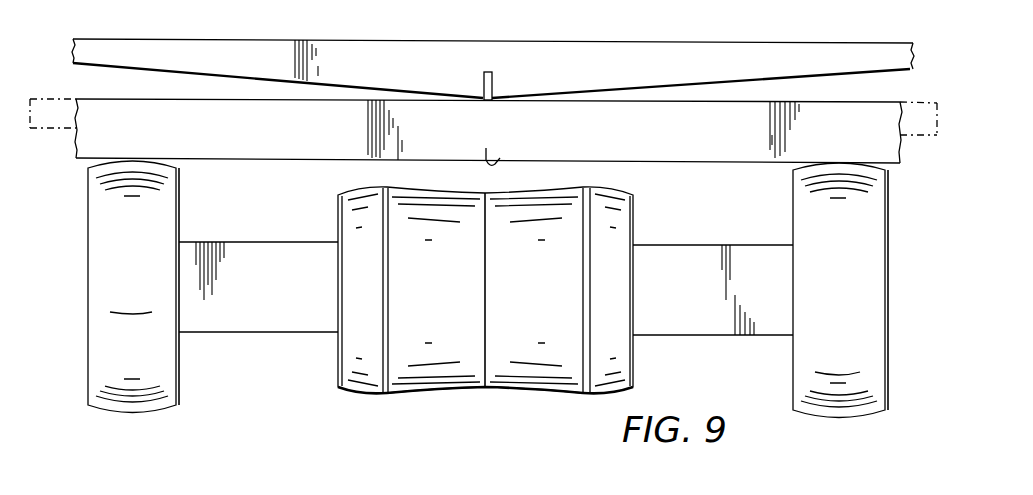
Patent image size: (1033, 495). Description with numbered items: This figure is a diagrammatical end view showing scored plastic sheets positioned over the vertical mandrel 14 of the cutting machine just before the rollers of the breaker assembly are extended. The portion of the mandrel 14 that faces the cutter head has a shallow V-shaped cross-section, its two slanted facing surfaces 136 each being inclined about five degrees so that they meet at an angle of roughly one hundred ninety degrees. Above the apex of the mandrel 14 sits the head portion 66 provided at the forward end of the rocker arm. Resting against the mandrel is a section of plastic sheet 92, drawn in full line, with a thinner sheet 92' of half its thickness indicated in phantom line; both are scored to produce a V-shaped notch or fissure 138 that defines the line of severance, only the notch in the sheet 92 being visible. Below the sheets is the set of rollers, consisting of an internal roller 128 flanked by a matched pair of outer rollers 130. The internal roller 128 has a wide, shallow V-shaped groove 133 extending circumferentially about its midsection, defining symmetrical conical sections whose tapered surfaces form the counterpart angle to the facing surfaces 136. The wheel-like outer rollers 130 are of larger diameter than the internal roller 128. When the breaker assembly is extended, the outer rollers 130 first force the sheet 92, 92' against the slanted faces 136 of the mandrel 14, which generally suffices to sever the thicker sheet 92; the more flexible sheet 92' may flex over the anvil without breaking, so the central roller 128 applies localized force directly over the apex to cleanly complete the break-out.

The vertical mandrel 14 is at (355, 50).
The facing surfaces 136 is at (134, 68).
The head portion 66 is at (493, 86).
The plastic sheet 92 is at (488, 152).
The plastic sheet 92' is at (482, 141).
The V-shaped notch 138 is at (494, 166).
The outer rollers 130 is at (112, 280).
The internal roller 128 is at (334, 338).
The V-shaped groove 133 is at (557, 394).